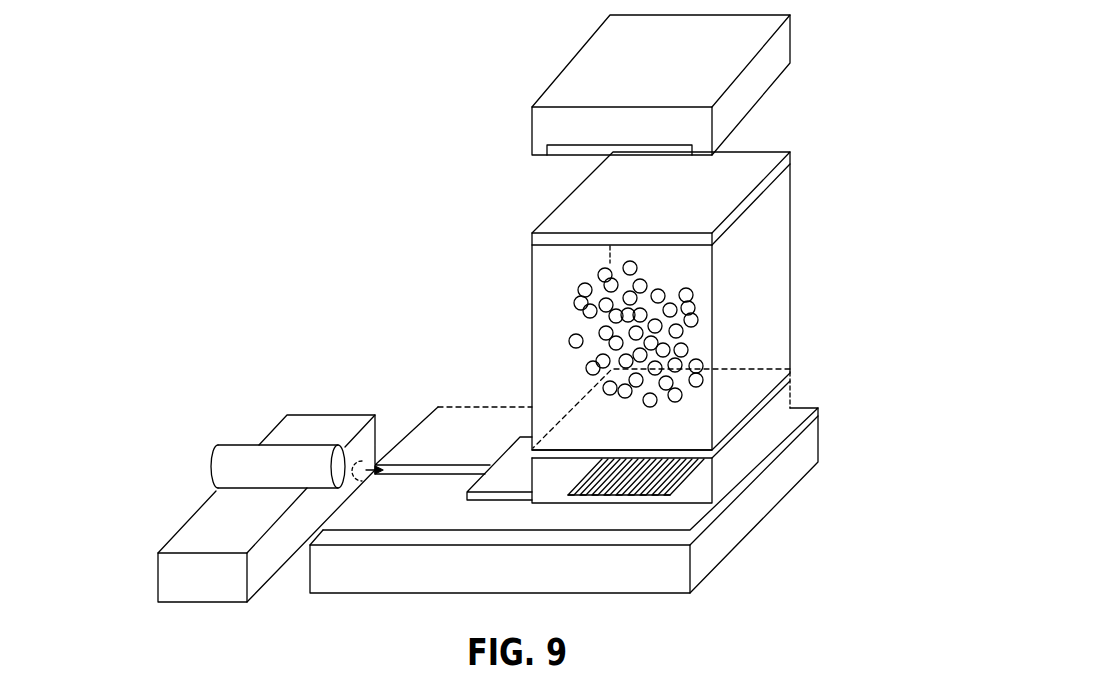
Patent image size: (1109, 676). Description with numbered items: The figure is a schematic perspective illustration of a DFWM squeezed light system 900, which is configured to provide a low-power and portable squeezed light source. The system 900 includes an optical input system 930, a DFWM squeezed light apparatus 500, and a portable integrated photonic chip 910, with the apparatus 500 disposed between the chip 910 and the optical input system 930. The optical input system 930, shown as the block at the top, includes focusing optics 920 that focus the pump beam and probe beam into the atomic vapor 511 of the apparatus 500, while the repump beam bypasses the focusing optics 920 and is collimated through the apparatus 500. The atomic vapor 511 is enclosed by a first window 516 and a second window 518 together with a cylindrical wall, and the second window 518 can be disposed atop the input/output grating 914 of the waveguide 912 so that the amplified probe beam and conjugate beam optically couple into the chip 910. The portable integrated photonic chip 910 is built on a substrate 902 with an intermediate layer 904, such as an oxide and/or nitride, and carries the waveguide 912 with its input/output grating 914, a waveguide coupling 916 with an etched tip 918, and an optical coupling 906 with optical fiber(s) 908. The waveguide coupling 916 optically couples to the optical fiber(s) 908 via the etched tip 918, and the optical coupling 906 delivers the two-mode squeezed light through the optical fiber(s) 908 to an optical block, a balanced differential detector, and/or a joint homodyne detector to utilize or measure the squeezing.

The DFWM squeezed light system 900 is at (868, 48).
The optical input system 930 is at (522, 112).
The focusing optics 920 is at (575, 153).
The DFWM squeezed light apparatus 500 is at (828, 278).
The first window 516 is at (768, 192).
The atomic vapor 511 is at (704, 317).
The second window 518 is at (752, 419).
The input/output grating 914 is at (629, 496).
The portable integrated photonic chip 910 is at (505, 452).
The waveguide 912 is at (487, 487).
The waveguide coupling 916 is at (423, 465).
The optical coupling 906 is at (193, 592).
The optical fiber(s) 908 is at (214, 466).
The etched tip 918 is at (363, 450).
The intermediate layer 904 is at (727, 497).
The substrate 902 is at (707, 538).